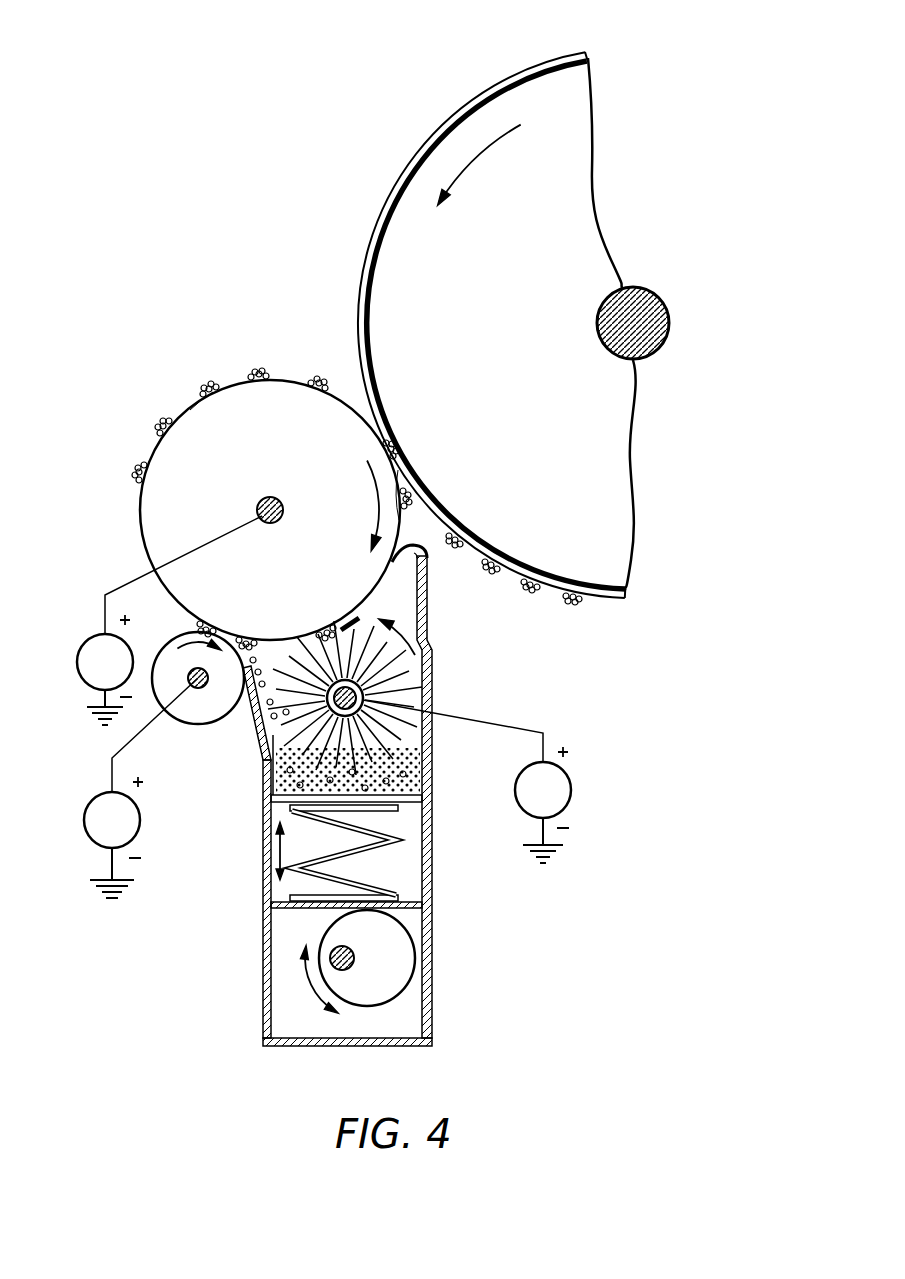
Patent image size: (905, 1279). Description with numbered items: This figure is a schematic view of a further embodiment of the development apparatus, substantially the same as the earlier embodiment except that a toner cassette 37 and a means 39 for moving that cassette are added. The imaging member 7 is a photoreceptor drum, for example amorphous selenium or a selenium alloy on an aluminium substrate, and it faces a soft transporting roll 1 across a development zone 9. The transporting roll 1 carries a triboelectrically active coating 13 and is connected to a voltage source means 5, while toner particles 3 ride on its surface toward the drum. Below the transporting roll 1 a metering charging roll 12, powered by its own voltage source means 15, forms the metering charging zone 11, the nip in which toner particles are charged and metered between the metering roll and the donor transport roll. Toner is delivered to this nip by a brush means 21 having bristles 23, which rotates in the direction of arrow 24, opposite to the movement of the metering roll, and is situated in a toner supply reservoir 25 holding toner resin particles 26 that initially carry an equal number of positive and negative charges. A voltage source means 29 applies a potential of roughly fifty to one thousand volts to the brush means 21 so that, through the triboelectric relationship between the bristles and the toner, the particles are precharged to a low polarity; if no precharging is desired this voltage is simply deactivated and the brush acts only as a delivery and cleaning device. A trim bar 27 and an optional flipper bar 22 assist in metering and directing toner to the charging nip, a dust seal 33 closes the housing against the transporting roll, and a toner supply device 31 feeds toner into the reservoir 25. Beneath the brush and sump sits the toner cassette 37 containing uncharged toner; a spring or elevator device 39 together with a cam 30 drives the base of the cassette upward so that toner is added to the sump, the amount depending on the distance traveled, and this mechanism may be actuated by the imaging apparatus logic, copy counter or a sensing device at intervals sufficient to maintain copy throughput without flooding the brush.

The soft transporting roll 1 is at (181, 425).
The toner particles 3 is at (305, 383).
The voltage source means 5 is at (86, 641).
The imaging member 7 is at (452, 115).
The development zone 9 is at (373, 437).
The metering charging zone 11 is at (220, 627).
The metering charging roll 12 is at (192, 727).
The triboelectrically active coating 13 is at (227, 385).
The voltage source means 15 is at (84, 818).
The brush means 21 is at (363, 693).
The flipper bar 22 is at (342, 621).
The bristles 23 is at (271, 761).
The brush rotation direction arrow 24 is at (402, 637).
The toner supply reservoir 25 is at (256, 803).
The toner resin particles 26 is at (428, 775).
The trim bar 27 is at (250, 715).
The voltage source means 29 is at (571, 788).
The cam 30 is at (402, 970).
The toner supply device 31 is at (431, 648).
The dust seal 33 is at (410, 545).
The toner cassette 37 is at (430, 799).
The spring or elevator device 39 is at (363, 858).